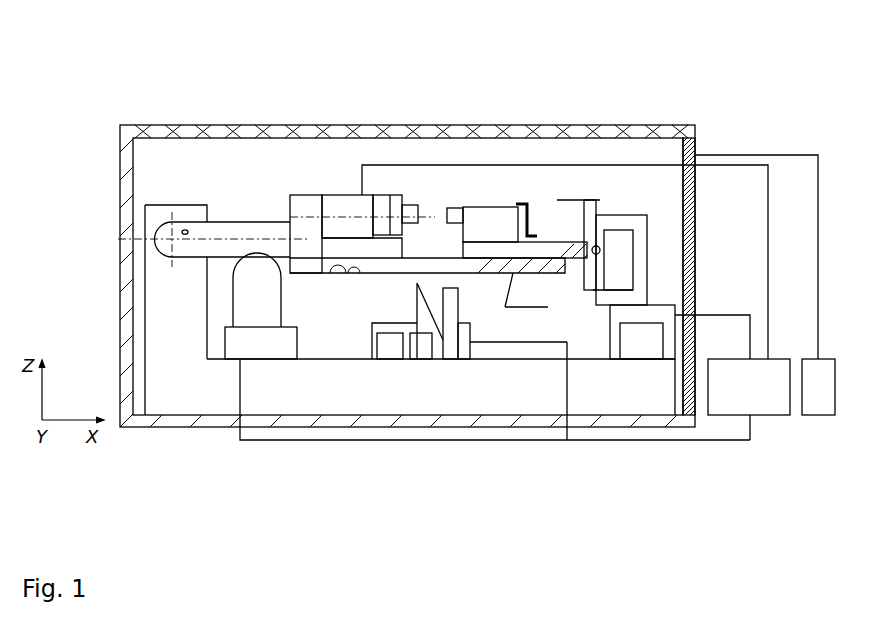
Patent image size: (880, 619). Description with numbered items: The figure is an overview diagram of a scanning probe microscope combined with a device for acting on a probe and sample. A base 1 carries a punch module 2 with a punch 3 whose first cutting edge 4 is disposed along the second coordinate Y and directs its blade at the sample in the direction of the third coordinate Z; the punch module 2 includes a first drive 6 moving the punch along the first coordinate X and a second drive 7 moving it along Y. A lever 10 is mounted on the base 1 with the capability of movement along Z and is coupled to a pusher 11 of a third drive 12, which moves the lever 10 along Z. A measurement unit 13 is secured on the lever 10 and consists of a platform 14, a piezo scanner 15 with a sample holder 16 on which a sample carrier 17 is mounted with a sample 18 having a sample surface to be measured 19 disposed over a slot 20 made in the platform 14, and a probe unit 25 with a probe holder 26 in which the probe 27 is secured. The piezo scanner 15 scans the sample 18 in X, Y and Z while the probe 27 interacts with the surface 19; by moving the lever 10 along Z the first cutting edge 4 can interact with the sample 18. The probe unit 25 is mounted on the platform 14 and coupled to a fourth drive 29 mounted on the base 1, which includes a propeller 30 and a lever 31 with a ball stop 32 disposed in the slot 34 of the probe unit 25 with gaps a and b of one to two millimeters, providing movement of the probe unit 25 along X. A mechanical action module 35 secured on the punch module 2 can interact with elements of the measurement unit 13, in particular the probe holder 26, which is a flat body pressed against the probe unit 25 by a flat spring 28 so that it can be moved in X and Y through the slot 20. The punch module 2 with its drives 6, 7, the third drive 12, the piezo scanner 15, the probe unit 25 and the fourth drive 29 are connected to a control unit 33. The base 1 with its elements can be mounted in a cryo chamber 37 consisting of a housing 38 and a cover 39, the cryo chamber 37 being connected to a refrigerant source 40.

The base 1 is at (160, 392).
The punch module 2 is at (447, 335).
The punch 3 is at (422, 300).
The first cutting edge 4 is at (452, 263).
The first drive 6 is at (395, 348).
The second drive 7 is at (420, 345).
The lever 10 is at (243, 237).
The pusher 11 is at (245, 283).
The third drive 12 is at (273, 343).
The measurement unit 13 is at (304, 200).
The platform 14 is at (322, 265).
The piezo scanner 15 is at (340, 205).
The sample holder 16 is at (389, 213).
The sample carrier 17 is at (387, 240).
The sample 18 is at (422, 207).
The sample surface to be measured 19 is at (456, 215).
The slot 20 is at (570, 345).
The probe unit 25 is at (587, 243).
The probe holder 26 is at (537, 250).
The probe 27 is at (498, 220).
The flat spring 28 is at (528, 290).
The fourth drive 29 is at (697, 345).
The propeller 30 is at (650, 327).
The lever 31 is at (668, 295).
The ball stop 32 is at (597, 225).
The control unit 33 is at (715, 400).
The slot 34 is at (590, 252).
The mechanical action module 35 is at (450, 310).
The cryo chamber 37 is at (772, 170).
The housing 38 is at (128, 140).
The cover 39 is at (215, 128).
The refrigerant source 40 is at (812, 390).